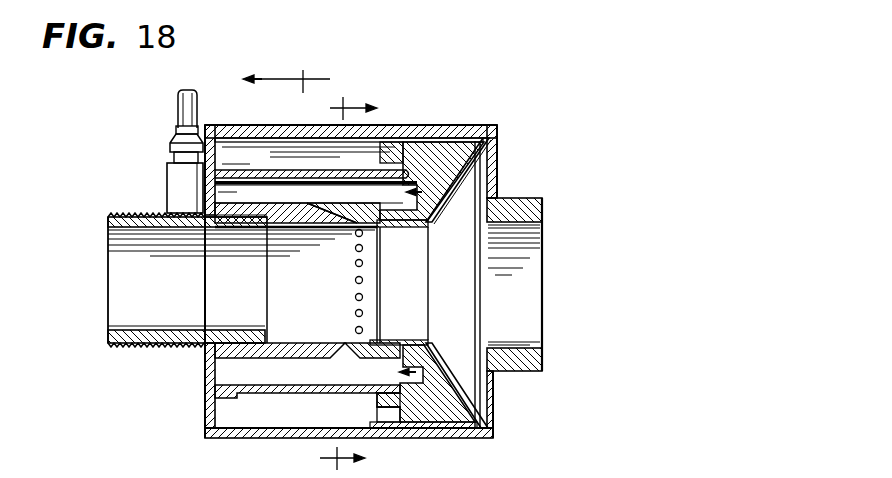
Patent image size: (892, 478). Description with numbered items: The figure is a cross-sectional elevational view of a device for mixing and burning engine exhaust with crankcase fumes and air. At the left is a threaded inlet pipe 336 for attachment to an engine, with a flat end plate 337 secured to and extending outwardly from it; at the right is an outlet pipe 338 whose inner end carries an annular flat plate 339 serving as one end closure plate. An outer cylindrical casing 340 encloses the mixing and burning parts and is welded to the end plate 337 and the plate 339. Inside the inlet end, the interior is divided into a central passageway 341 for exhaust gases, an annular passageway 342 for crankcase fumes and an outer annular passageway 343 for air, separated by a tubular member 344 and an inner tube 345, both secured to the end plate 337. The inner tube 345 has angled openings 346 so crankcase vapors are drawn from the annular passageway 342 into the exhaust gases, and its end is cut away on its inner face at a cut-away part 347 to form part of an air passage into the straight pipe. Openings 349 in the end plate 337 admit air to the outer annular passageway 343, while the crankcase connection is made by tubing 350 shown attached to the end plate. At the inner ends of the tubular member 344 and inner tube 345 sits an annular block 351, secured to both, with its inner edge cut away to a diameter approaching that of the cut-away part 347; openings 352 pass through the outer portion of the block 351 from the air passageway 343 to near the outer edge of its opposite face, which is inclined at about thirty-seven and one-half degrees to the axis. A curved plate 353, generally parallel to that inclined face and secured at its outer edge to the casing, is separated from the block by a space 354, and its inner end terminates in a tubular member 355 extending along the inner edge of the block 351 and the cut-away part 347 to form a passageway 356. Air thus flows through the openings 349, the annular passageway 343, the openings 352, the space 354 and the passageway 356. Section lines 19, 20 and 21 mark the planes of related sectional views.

The section line 19 is at (274, 81).
The section line 20 is at (361, 284).
The section line 21 is at (418, 288).
The inlet pipe 336 is at (150, 347).
The flat end plate 337 is at (203, 400).
The outlet pipe 338 is at (532, 198).
The annular flat plate 339 is at (498, 165).
The outer cylindrical casing 340 is at (432, 131).
The central passageway 341 is at (307, 253).
The annular passageway 342 is at (275, 193).
The outer annular passageway 343 is at (260, 138).
The tubular member 344 is at (282, 394).
The inner tube 345 is at (289, 358).
The openings 346 is at (348, 216).
The cut-away part 347 is at (368, 231).
The openings 349 is at (222, 148).
The tubing 350 is at (167, 162).
The annular block 351 is at (423, 167).
The openings 352 is at (467, 130).
The curved plate 353 is at (438, 205).
The space 354 is at (446, 181).
The tubular member 355 is at (385, 236).
The passageway 356 is at (410, 234).